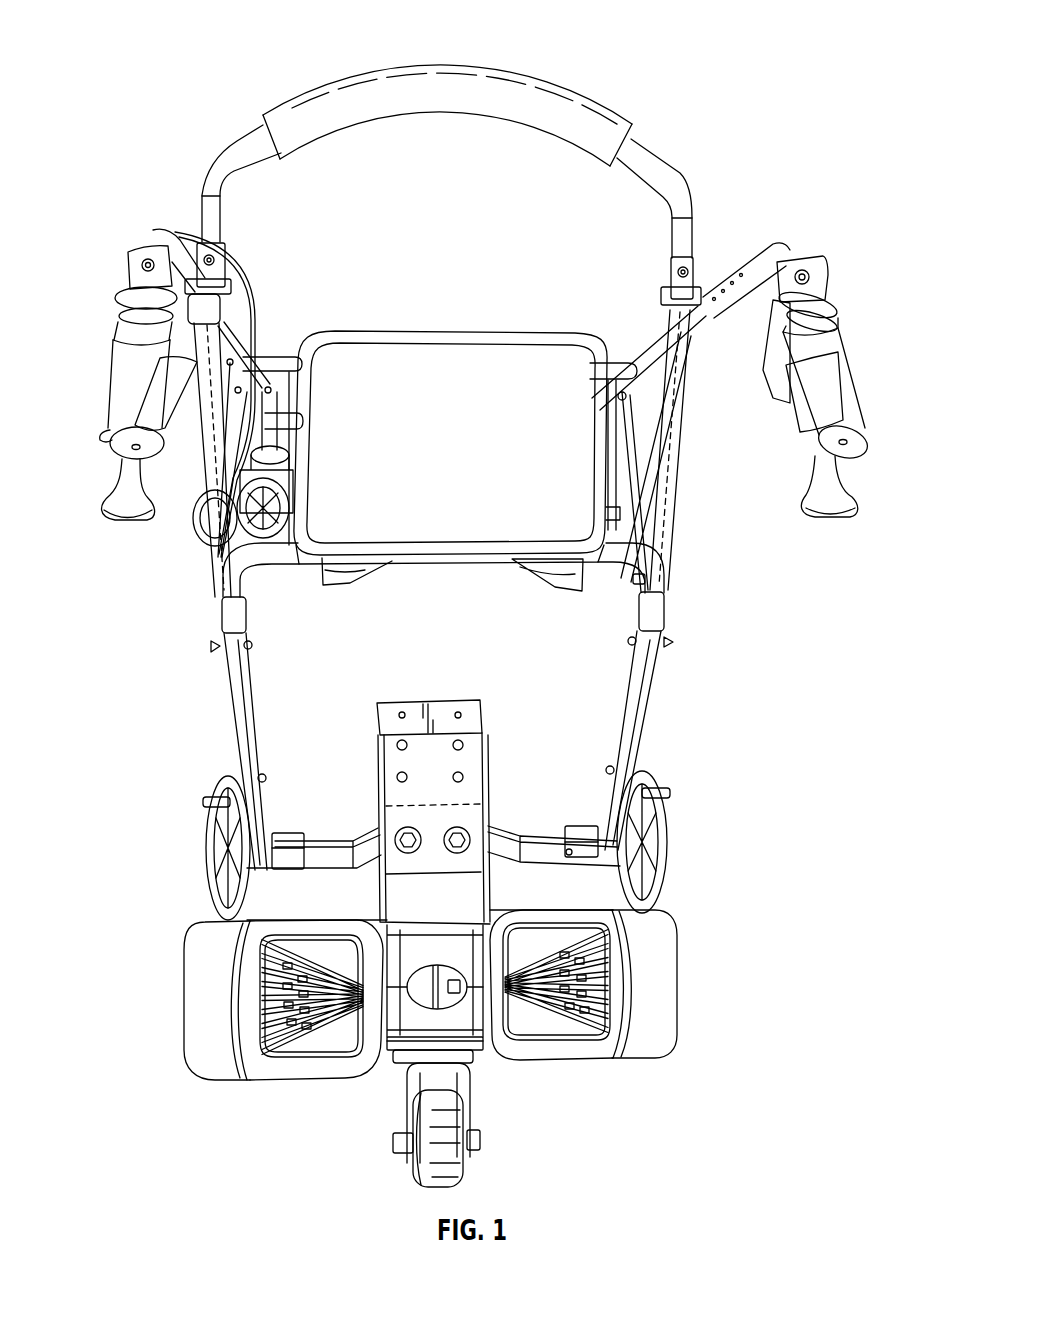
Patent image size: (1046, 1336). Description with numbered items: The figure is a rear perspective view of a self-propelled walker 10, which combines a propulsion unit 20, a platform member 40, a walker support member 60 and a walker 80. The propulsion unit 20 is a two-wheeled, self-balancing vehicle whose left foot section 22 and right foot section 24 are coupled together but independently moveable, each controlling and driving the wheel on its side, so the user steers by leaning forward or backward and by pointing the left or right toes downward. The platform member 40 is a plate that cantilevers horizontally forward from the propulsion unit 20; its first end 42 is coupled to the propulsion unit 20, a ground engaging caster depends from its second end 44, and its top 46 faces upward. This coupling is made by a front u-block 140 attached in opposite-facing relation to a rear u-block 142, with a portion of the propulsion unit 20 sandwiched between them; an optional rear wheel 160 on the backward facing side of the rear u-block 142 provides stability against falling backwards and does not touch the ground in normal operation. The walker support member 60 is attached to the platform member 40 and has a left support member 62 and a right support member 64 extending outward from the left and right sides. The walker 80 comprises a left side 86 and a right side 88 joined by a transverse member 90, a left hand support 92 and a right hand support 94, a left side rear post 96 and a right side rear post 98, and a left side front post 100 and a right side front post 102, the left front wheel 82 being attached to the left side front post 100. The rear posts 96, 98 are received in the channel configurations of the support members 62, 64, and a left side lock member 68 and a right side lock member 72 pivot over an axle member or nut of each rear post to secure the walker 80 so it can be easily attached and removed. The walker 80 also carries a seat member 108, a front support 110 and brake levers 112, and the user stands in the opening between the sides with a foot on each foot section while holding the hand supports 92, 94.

The self-propelled walker 10 is at (768, 77).
The propulsion unit 20 is at (475, 1015).
The left foot section 22 is at (293, 1038).
The right foot section 24 is at (577, 1020).
The platform member 40 is at (466, 781).
The first end 42 is at (452, 954).
The second end 44 is at (457, 698).
The top 46 is at (443, 817).
The walker support member 60 is at (433, 829).
The left support member 62 is at (342, 876).
The right support member 64 is at (527, 833).
The left side lock member 68 is at (287, 832).
The right side lock member 72 is at (578, 825).
The walker 80 is at (688, 576).
The left front wheel 82 is at (192, 523).
The left side 86 is at (205, 174).
The right side 88 is at (693, 200).
The transverse member 90 is at (606, 364).
The left hand support 92 is at (116, 322).
The right hand support 94 is at (823, 277).
The left side rear post 96 is at (231, 698).
The right side rear post 98 is at (641, 714).
The left side front post 100 is at (262, 400).
The right side front post 102 is at (626, 399).
The seat member 108 is at (470, 452).
The front support 110 is at (575, 92).
The brake levers 112 is at (120, 525).
The front u-block 140 is at (408, 958).
The rear u-block 142 is at (388, 1054).
The rear wheel 160 is at (480, 1137).